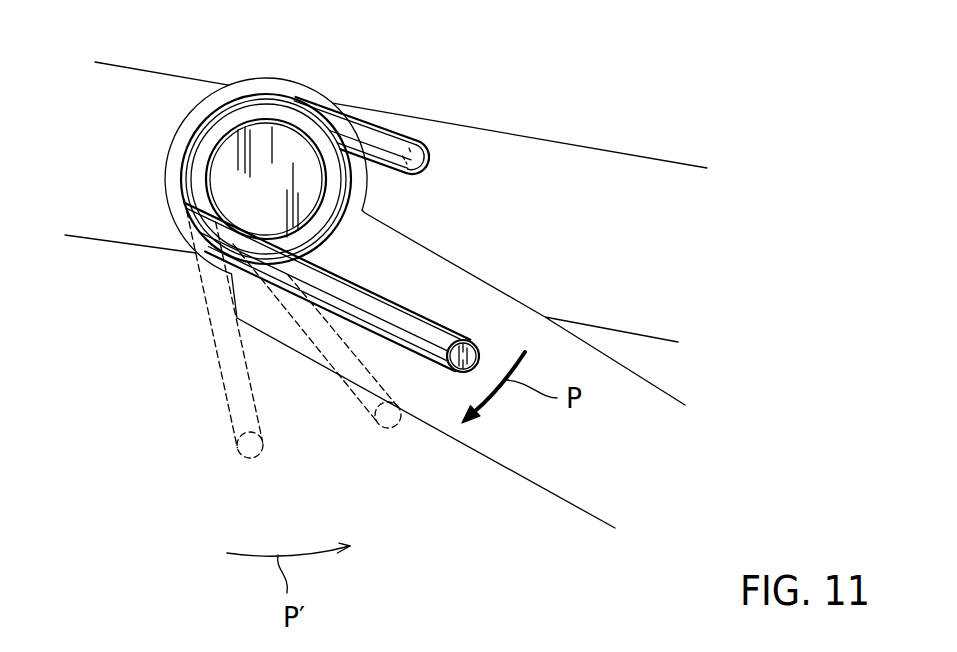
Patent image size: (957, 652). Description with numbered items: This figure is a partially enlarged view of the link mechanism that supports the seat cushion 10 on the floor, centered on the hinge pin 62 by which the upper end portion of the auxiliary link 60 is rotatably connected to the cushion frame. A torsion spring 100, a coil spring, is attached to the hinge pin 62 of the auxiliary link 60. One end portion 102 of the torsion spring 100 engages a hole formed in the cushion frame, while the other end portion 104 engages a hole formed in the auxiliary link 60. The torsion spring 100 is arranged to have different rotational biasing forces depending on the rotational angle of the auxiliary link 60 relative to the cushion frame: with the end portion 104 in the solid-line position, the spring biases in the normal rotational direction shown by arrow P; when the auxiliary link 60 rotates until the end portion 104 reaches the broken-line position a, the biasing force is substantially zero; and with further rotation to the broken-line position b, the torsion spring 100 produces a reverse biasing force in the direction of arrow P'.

The seat cushion 10 is at (582, 162).
The auxiliary link 60 is at (520, 455).
The hinge pin 62 is at (271, 148).
The torsion spring 100 is at (215, 128).
The one end portion 102 is at (414, 142).
The other end portion 104 is at (475, 342).
The position a is at (388, 428).
The position b is at (250, 458).